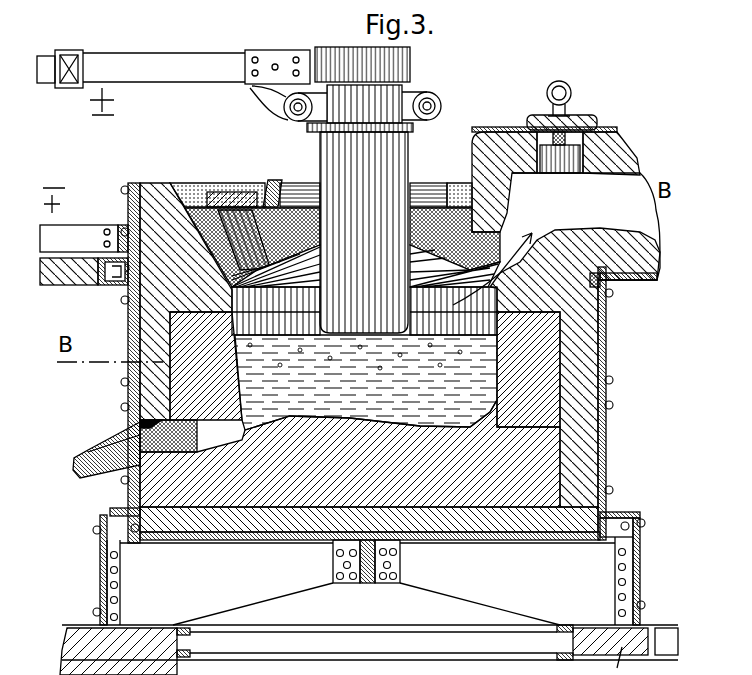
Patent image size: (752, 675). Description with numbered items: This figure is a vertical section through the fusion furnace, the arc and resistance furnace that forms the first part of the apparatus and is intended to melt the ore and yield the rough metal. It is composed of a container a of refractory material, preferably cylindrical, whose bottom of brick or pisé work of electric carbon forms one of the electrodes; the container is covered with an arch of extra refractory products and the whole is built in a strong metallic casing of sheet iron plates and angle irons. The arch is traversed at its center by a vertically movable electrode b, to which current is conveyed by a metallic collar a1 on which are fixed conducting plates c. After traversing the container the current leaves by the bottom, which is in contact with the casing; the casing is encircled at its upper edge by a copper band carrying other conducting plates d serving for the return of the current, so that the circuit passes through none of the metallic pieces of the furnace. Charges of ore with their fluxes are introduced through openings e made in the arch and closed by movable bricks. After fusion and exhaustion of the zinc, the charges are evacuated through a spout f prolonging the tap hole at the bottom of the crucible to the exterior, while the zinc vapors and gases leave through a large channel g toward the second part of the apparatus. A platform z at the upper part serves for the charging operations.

The container a is at (364, 310).
The metallic collar a1 is at (441, 106).
The electrode b is at (411, 69).
The conducting plates c is at (197, 71).
The conducting plates d is at (84, 225).
The openings e is at (238, 200).
The spout f is at (116, 442).
The channel g is at (673, 205).
The platform z is at (70, 283).